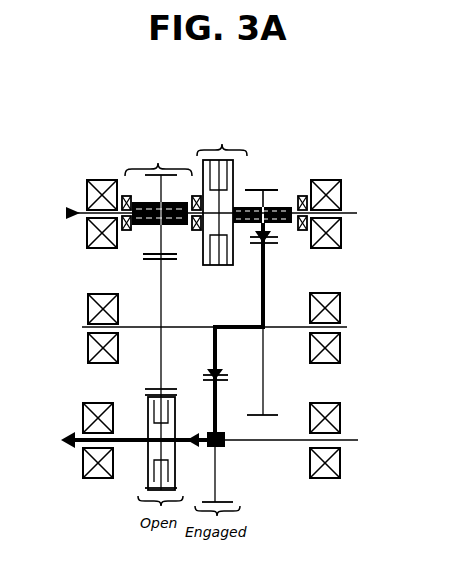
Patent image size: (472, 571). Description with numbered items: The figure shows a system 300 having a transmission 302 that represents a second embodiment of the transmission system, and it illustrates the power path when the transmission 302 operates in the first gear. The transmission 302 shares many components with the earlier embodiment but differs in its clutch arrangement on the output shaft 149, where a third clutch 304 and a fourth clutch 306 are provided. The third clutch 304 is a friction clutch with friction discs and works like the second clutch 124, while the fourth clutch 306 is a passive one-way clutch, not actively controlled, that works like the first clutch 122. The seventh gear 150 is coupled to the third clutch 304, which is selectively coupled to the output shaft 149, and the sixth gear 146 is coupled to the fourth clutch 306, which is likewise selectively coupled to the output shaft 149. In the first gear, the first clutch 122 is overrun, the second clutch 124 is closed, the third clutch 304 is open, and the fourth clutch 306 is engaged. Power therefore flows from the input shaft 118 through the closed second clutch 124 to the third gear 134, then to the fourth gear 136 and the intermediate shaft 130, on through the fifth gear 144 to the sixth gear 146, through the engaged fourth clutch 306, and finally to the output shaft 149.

The system 300 is at (64, 166).
The transmission 302 is at (318, 119).
The input shaft 118 is at (348, 213).
The first clutch 122 is at (137, 248).
The second clutch 124 is at (250, 169).
The third gear 134 is at (266, 228).
The fourth gear 136 is at (266, 277).
The intermediate shaft 130 is at (347, 327).
The fifth gear 144 is at (212, 342).
The sixth gear 146 is at (212, 387).
The seventh gear 150 is at (148, 395).
The third clutch 304 is at (126, 484).
The fourth clutch 306 is at (237, 460).
The output shaft 149 is at (345, 441).